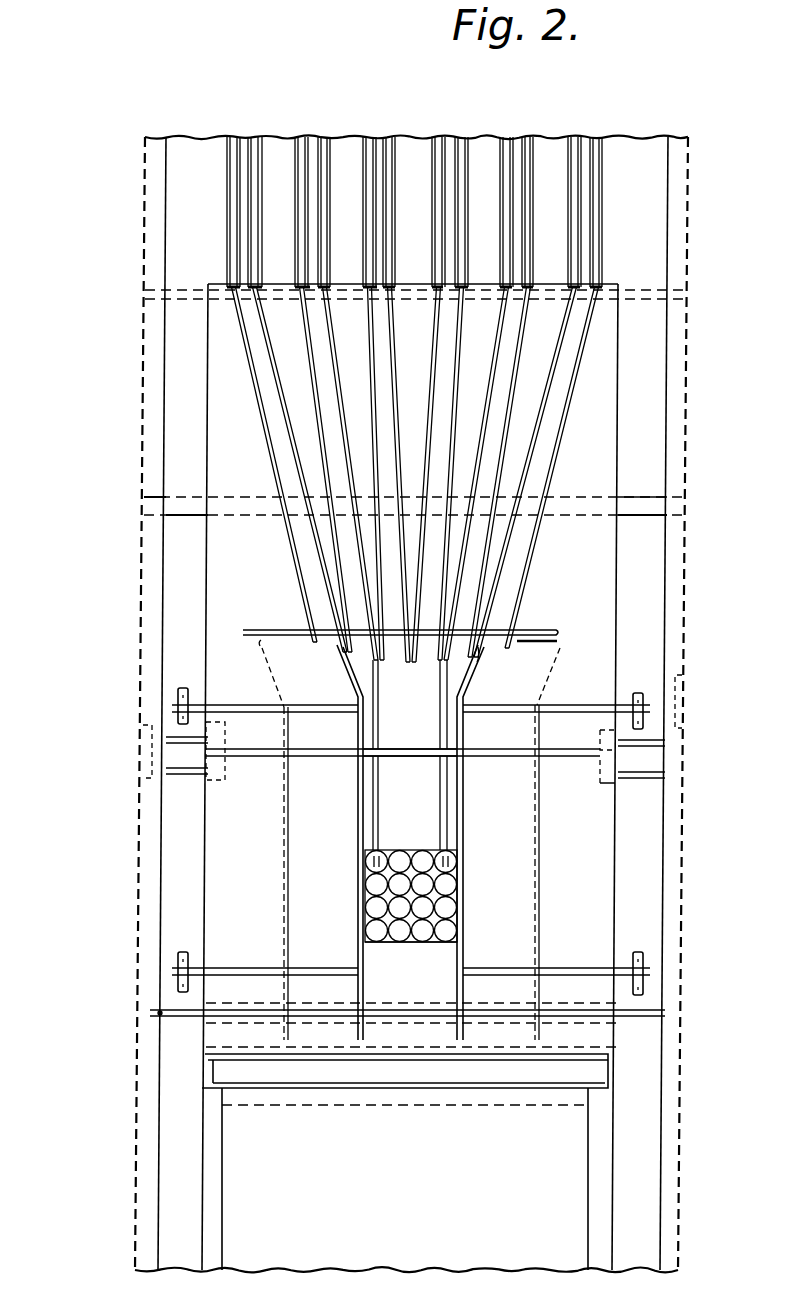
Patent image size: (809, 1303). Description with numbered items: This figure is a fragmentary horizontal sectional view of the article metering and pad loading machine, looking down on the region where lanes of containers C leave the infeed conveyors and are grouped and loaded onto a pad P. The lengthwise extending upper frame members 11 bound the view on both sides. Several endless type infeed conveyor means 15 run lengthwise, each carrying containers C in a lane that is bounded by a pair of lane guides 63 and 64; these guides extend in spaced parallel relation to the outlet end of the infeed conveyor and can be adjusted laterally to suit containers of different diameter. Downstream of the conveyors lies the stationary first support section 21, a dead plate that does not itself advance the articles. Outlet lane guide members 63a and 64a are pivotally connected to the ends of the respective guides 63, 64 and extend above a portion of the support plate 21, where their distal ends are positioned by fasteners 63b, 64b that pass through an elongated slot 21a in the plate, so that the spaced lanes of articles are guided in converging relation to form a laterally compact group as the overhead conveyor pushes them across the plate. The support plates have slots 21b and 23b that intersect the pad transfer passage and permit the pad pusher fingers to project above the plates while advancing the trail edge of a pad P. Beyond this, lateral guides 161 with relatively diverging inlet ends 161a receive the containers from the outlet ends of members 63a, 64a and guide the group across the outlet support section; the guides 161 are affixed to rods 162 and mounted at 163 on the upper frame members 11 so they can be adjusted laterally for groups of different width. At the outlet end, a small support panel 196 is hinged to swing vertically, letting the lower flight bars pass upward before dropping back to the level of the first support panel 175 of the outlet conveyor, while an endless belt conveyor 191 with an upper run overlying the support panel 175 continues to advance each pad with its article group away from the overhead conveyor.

The upper frame members 11 is at (143, 476).
The infeed conveyor means 15 is at (313, 150).
The first support section 21 is at (607, 432).
The lane guide 63 is at (325, 153).
The lane guide 64 is at (290, 152).
The outlet lane guide member 63a is at (312, 535).
The outlet lane guide member 64a is at (268, 463).
The elongated slot 21a is at (540, 632).
The fastener 63b is at (557, 642).
The fastener 64b is at (480, 650).
The slot 21b is at (450, 740).
The slot 23b is at (447, 800).
The containers C is at (445, 905).
The pad P is at (410, 945).
The lateral guides 161 is at (462, 955).
The diverging inlet ends 161a is at (352, 674).
The rods 162 is at (587, 693).
The mounting 163 is at (645, 700).
The small support panel 196 is at (600, 1075).
The first support panel 175 is at (602, 1147).
The endless belt conveyor 191 is at (573, 1182).